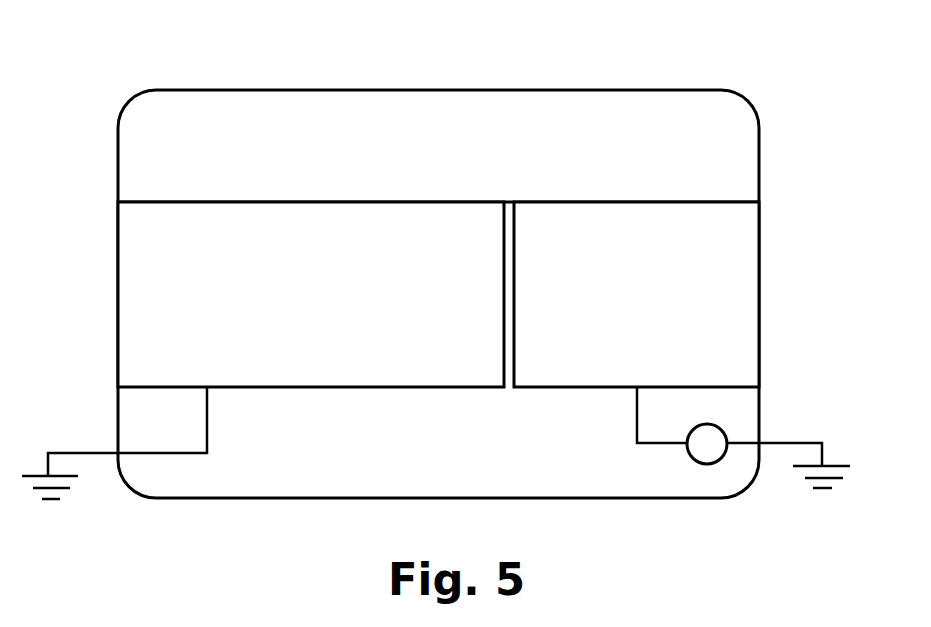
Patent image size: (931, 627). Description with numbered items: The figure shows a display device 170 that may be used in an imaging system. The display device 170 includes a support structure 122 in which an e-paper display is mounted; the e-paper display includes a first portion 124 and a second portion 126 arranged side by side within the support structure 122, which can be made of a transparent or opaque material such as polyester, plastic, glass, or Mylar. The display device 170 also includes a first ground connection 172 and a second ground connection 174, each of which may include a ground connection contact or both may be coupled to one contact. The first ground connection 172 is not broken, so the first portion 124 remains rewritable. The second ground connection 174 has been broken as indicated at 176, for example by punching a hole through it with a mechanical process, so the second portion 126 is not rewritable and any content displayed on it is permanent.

The display device 170 is at (668, 89).
The support structure 122 is at (735, 141).
The first portion 124 is at (147, 283).
The second portion 126 is at (710, 280).
The first ground connection 172 is at (82, 451).
The second ground connection 174 is at (793, 441).
The break 176 is at (706, 452).